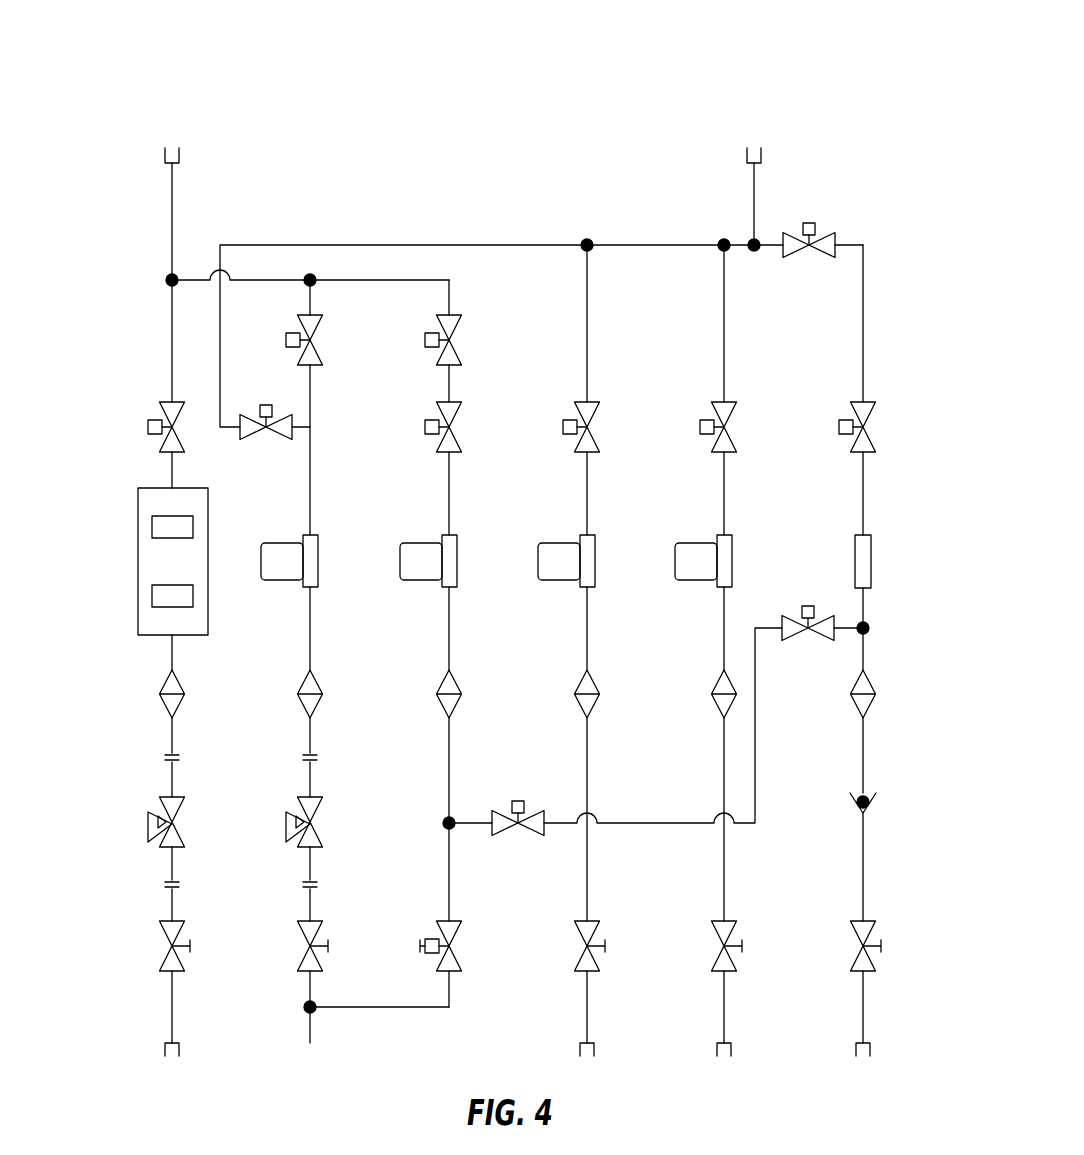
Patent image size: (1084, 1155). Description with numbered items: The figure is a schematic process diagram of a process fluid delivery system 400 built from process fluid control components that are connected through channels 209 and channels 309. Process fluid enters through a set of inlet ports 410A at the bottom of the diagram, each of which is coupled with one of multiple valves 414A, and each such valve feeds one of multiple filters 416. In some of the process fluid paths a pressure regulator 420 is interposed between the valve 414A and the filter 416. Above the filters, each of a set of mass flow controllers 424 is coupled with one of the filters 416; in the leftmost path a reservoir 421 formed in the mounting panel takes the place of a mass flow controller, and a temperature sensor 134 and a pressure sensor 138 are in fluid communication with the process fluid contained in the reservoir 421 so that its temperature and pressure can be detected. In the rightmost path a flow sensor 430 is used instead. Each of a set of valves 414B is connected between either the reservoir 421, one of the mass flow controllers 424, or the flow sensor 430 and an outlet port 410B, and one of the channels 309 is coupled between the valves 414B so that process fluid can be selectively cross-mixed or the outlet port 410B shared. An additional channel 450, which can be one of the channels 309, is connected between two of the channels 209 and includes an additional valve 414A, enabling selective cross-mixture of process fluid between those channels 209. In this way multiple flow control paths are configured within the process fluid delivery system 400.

The process fluid delivery system 400 is at (888, 54).
The outlet port 410B is at (180, 160).
The inlet ports 410A is at (155, 1048).
The channels 309 is at (403, 282).
The channels 209 is at (878, 320).
The valves 414B is at (143, 427).
The valves 414A is at (140, 947).
The reservoir 421 is at (138, 557).
The pressure sensor 138 is at (152, 525).
The temperature sensor 134 is at (152, 593).
The mass flow controller 424 is at (318, 538).
The flow sensor 430 is at (871, 557).
The filters 416 is at (145, 695).
The pressure regulator 420 is at (140, 820).
The additional channel 450 is at (686, 830).